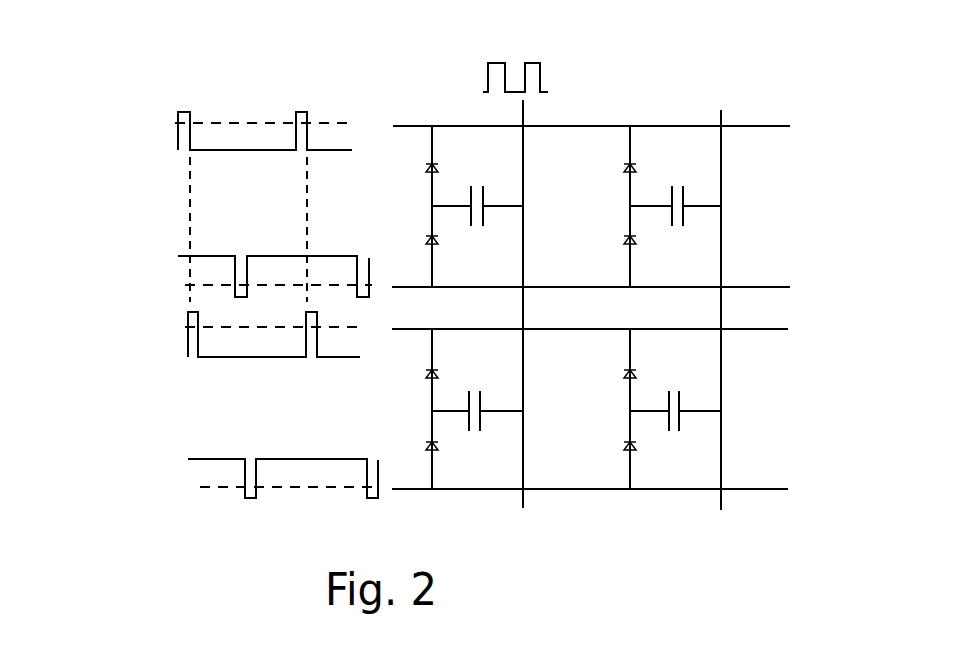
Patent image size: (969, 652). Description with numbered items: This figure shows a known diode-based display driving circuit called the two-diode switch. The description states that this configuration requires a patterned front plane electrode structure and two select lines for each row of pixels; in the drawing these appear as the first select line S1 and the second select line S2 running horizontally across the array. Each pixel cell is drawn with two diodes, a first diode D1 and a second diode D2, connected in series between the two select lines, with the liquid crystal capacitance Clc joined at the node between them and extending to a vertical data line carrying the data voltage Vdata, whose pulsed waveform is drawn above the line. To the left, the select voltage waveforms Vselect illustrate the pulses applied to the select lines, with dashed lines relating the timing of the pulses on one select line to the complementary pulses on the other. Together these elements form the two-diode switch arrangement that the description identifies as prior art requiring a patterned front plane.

The first select line S1 is at (611, 134).
The second select line S2 is at (610, 298).
The first diode D1 is at (407, 173).
The second diode D2 is at (411, 241).
The liquid crystal capacitor Clc is at (477, 193).
The data voltage line Vdata is at (513, 264).
The select voltage waveforms Vselect is at (211, 305).